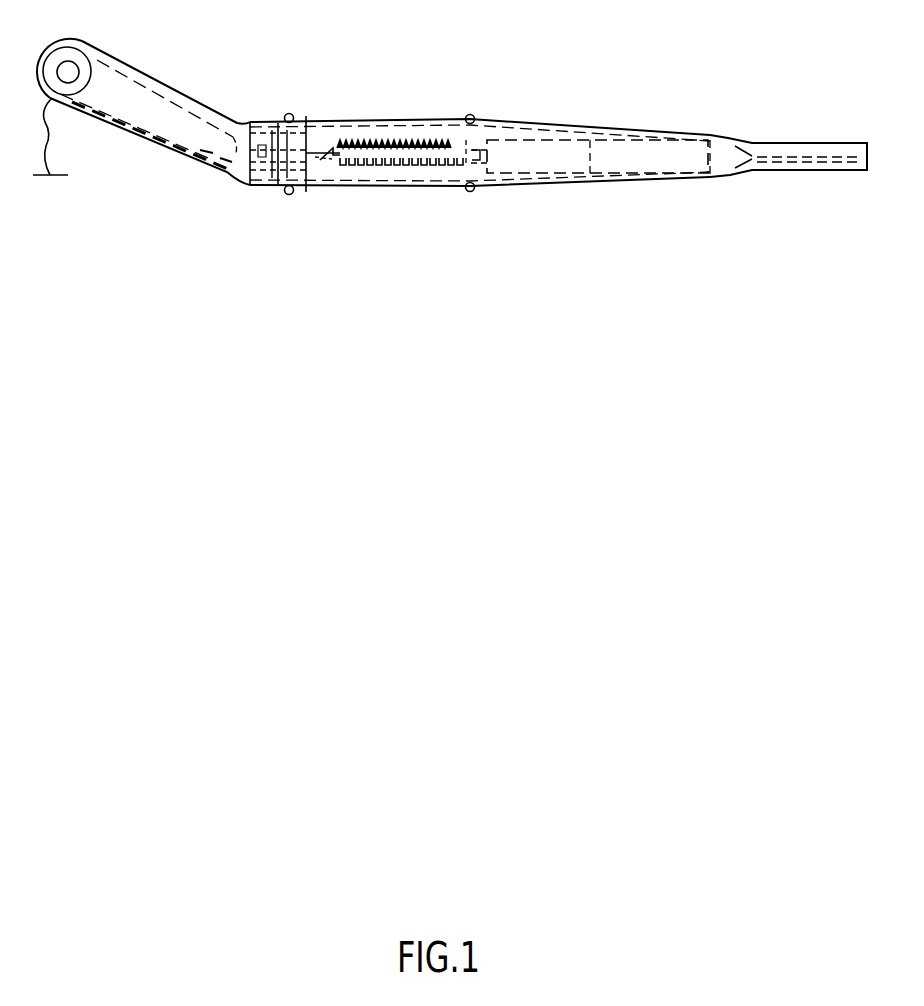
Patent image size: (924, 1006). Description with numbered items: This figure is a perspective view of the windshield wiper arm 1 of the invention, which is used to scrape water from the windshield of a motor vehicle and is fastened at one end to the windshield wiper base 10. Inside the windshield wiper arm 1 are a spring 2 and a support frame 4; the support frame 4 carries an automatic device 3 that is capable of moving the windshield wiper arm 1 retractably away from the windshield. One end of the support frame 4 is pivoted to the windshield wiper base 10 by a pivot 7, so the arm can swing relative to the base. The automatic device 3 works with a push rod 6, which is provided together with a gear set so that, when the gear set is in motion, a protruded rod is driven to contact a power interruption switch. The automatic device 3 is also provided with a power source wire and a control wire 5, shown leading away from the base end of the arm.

The windshield wiper arm 1 is at (533, 123).
The spring 2 is at (363, 140).
The automatic device 3 is at (643, 178).
The support frame 4 is at (447, 183).
The control wire 5 is at (117, 115).
The push rod 6 is at (702, 132).
The pivot 7 is at (290, 193).
The windshield wiper base 10 is at (153, 100).